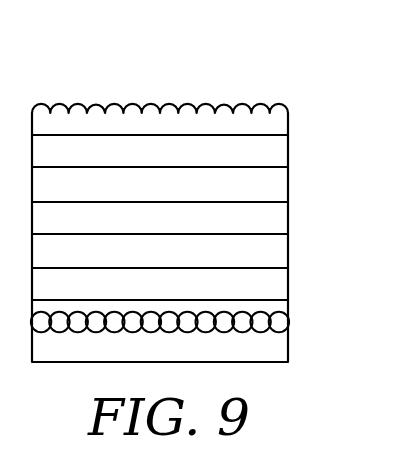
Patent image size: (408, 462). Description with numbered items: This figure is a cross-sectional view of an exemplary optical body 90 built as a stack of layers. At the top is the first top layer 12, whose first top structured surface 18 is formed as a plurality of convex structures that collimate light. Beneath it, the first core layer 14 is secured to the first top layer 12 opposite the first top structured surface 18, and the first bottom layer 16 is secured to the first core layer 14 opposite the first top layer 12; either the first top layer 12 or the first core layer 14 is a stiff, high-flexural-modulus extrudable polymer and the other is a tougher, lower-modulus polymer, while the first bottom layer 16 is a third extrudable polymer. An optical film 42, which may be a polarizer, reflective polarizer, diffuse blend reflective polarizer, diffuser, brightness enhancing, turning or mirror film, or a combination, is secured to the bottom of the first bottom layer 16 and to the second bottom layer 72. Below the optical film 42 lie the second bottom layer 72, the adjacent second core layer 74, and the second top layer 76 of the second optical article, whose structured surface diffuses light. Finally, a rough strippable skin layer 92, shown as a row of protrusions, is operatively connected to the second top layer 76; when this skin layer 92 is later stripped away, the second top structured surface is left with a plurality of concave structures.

The optical body 90 is at (233, 55).
The first top structured surface 18 is at (257, 105).
The first top layer 12 is at (275, 120).
The first core layer 14 is at (275, 153).
The first bottom layer 16 is at (275, 187).
The optical film 42 is at (275, 217).
The second bottom layer 72 is at (275, 252).
The second core layer 74 is at (275, 285).
The second top layer 76 is at (280, 306).
The rough strippable skin layer 92 is at (275, 351).